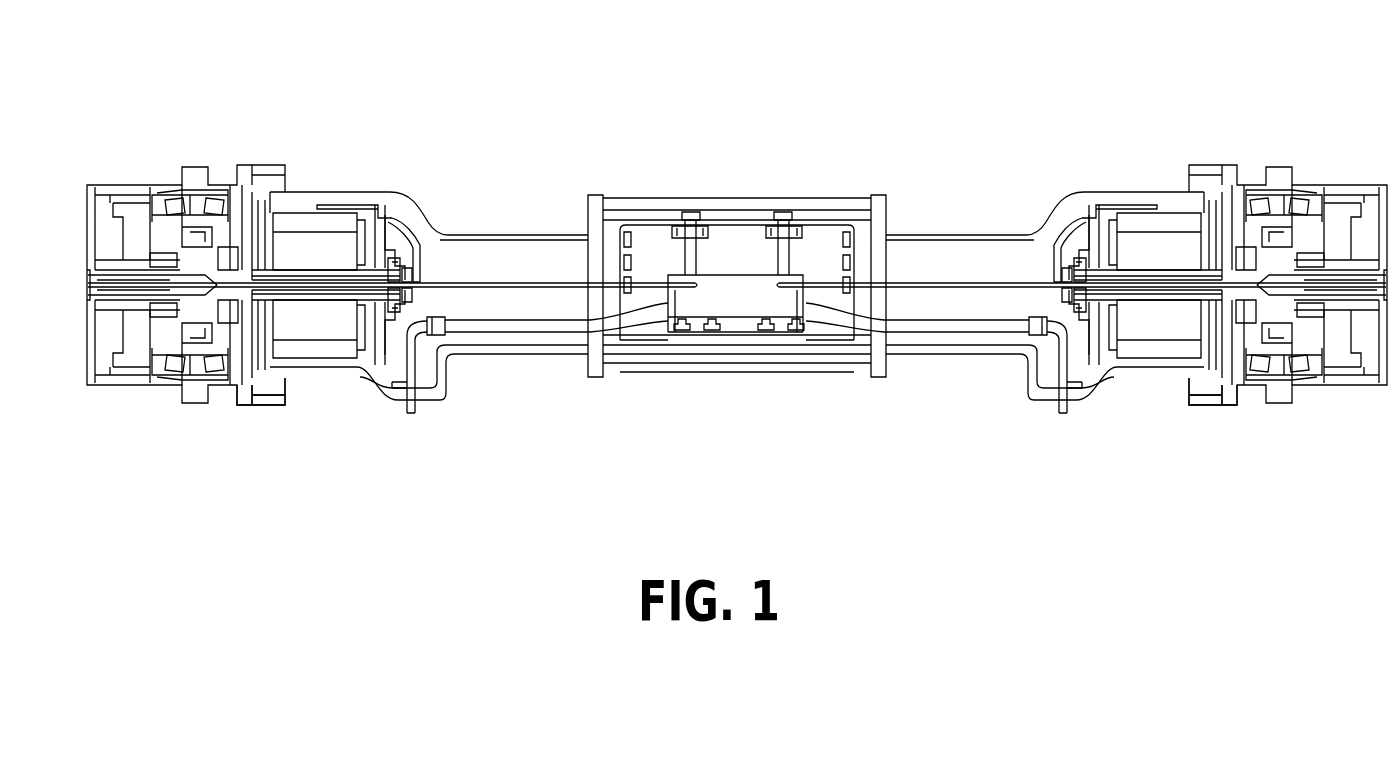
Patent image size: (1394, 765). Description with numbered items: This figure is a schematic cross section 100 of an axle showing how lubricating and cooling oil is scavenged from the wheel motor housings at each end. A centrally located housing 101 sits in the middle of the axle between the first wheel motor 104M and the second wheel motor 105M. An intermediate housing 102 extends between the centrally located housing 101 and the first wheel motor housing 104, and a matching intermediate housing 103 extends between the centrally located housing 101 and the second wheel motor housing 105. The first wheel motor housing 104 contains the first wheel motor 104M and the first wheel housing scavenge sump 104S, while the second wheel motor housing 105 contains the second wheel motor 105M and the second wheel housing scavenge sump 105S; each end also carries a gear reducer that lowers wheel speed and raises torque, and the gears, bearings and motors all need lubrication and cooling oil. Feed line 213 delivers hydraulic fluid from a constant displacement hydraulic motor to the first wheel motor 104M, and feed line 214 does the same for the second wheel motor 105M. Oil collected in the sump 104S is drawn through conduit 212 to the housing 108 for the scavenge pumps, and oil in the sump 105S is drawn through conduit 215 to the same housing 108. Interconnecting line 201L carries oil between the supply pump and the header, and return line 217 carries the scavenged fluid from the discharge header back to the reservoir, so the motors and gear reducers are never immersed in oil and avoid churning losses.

The schematic cross section 100 is at (905, 60).
The centrally located housing 101 is at (675, 196).
The intermediate housing 102 is at (495, 232).
The intermediate housing 103 is at (966, 232).
The first wheel motor housing 104 is at (331, 192).
The second wheel motor housing 105 is at (1138, 192).
The first wheel motor 104M is at (312, 345).
The second wheel motor 105M is at (1165, 345).
The first wheel housing scavenge sump 104S is at (410, 372).
The second wheel housing scavenge sump 105S is at (1063, 372).
The housing for scavenge pumps 108 is at (735, 305).
The interconnecting line 201L is at (706, 250).
The conduit 212 is at (520, 326).
The feed line 213 is at (553, 282).
The feed line 214 is at (990, 282).
The conduit 215 is at (920, 326).
The return line 217 is at (792, 247).